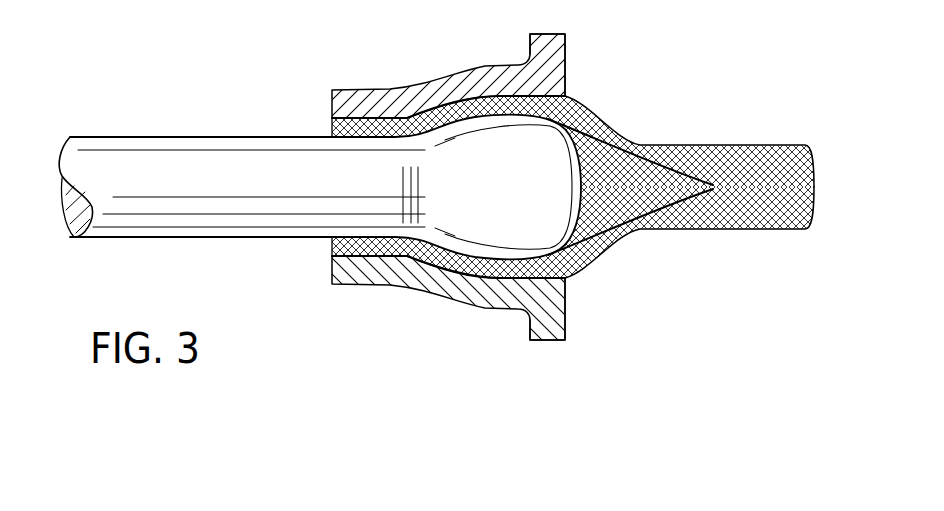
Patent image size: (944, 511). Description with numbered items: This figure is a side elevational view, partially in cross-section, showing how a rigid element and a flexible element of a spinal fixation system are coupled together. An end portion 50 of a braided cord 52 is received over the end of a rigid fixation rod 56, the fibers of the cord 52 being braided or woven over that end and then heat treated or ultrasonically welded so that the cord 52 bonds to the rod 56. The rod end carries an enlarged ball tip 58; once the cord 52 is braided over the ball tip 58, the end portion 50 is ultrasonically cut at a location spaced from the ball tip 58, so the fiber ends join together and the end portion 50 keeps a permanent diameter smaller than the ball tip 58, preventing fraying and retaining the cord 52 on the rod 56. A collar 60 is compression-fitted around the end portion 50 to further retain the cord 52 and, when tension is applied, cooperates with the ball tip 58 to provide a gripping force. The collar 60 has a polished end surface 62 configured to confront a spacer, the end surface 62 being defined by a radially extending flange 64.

The end portion of the cord 50 is at (373, 122).
The braided cord 52 is at (728, 142).
The rigid fixation rod 56 is at (150, 136).
The enlarged ball tip 58 is at (528, 183).
The collar 60 is at (440, 296).
The polished end surface 62 is at (565, 58).
The radially extending flange 64 is at (557, 341).